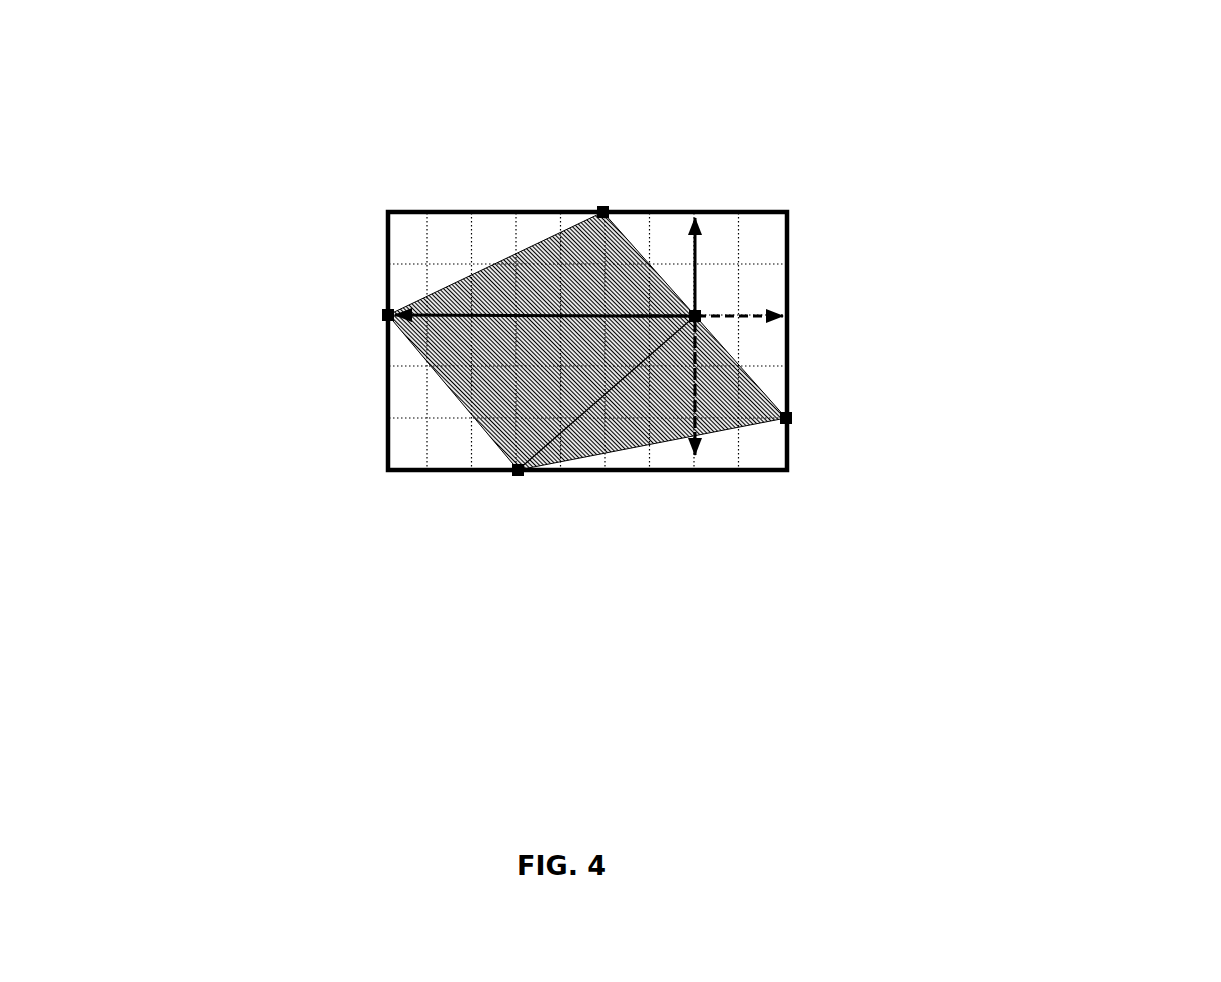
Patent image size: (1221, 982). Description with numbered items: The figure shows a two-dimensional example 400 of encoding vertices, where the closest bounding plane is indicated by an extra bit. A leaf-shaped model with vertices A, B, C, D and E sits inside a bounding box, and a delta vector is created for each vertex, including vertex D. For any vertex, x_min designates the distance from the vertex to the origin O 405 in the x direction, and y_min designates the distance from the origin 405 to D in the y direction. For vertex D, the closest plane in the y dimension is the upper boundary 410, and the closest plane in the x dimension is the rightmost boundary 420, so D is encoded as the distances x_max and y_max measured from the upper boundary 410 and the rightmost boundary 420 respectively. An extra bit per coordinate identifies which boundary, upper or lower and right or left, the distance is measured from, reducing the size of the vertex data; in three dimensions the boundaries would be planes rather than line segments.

The diagram of bounding region and feature points 400 is at (1156, 127).
The origin 405 is at (386, 468).
The upper boundary 410 is at (755, 210).
The rightmost boundary 420 is at (782, 295).